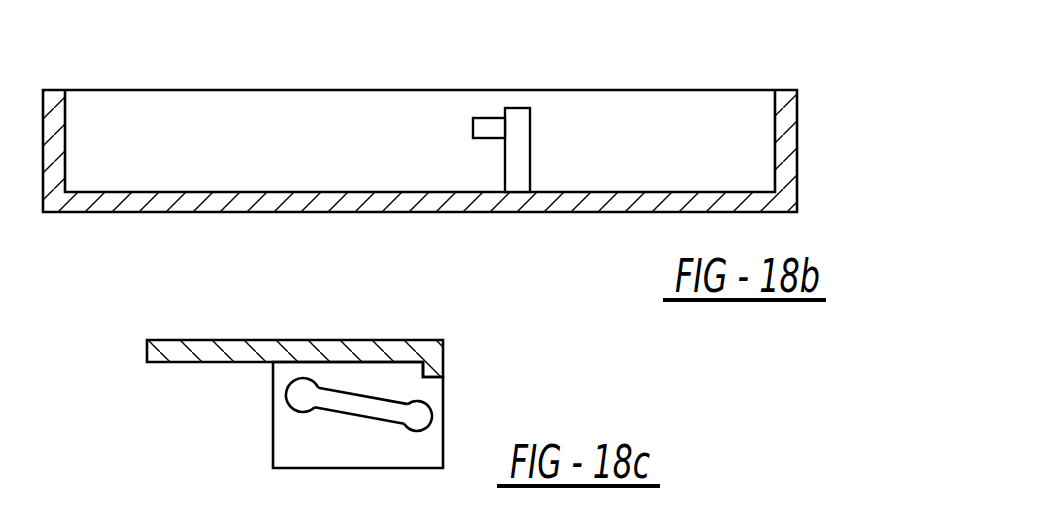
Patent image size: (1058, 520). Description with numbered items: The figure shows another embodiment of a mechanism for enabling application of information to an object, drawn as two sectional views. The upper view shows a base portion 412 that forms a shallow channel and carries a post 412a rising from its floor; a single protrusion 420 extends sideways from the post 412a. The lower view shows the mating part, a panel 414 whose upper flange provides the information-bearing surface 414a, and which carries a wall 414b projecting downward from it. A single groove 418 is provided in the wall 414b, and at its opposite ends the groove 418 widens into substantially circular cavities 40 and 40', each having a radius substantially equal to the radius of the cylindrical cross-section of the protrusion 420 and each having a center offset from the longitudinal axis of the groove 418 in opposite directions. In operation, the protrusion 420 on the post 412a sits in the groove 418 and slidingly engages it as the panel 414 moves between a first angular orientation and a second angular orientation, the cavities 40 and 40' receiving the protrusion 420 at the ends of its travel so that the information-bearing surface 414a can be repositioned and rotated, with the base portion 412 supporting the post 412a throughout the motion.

In FIG. 18B, the base portion 412 is at (462, 113).
In FIG. 18B, the post 412a is at (520, 135).
In FIG. 18B, the protrusion 420 is at (488, 118).
In FIG. 18C, the panel 414 is at (345, 385).
In FIG. 18C, the information-bearing surface 414a is at (203, 340).
In FIG. 18C, the wall 414b is at (427, 452).
In FIG. 18C, the cavity 40 is at (363, 421).
In FIG. 18C, the cavity 40' is at (253, 422).
In FIG. 18C, the groove 418 is at (353, 416).